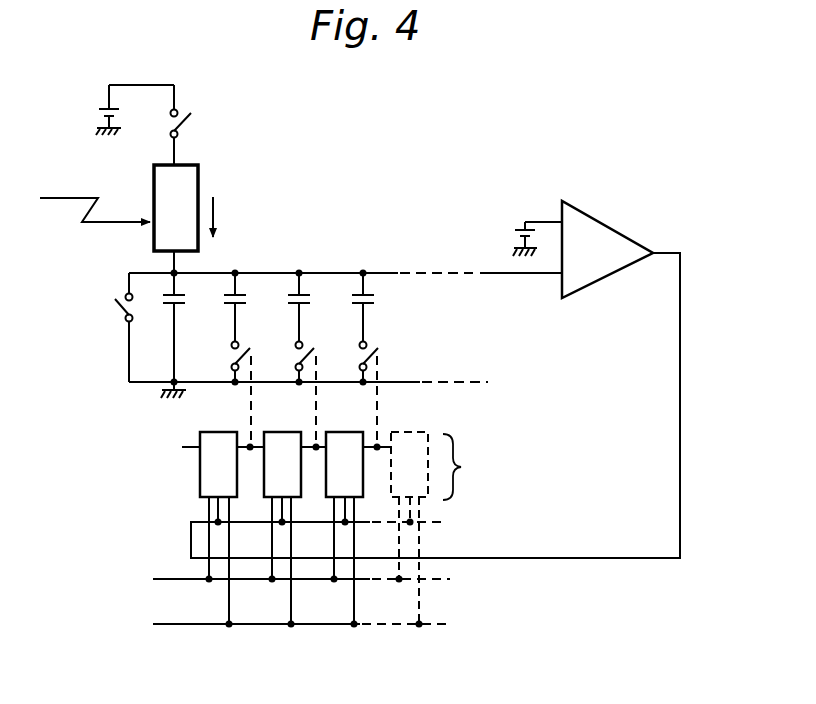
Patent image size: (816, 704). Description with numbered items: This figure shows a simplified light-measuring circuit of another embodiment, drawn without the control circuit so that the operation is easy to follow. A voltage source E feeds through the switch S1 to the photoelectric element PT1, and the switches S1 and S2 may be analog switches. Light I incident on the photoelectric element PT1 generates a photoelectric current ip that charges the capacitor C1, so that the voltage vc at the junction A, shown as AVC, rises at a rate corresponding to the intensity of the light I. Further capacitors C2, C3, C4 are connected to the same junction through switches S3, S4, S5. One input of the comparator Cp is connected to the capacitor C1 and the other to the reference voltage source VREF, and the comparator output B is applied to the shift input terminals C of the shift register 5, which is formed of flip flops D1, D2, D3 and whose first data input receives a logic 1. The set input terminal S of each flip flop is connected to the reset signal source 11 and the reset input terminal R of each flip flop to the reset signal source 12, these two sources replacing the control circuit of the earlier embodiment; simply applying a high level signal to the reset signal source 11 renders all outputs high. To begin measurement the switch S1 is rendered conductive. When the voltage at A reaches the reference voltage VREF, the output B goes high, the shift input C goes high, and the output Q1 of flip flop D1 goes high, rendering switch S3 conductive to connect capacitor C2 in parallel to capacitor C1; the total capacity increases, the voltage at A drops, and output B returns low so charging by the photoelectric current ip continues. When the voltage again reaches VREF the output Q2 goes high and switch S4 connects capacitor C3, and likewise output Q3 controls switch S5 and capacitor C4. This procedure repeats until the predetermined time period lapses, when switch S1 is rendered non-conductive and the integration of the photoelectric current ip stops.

The battery / voltage source E is at (93, 112).
The switch S1 is at (183, 128).
The photoelectric element PT1 is at (193, 219).
The light I is at (95, 196).
The photoelectric current ip is at (224, 217).
The junction A voltage vc AVC is at (334, 260).
The switch S2 is at (114, 311).
The capacitor C1 is at (184, 301).
The capacitor C2 is at (245, 302).
The capacitor C3 is at (309, 302).
The capacitor C4 is at (373, 302).
The switch S3 is at (245, 352).
The switch S4 is at (309, 352).
The switch S5 is at (373, 352).
The comparator Cp is at (589, 249).
The reference voltage source VREF is at (510, 233).
The comparator output B is at (435, 391).
The logic one input 1 is at (174, 446).
The flip flop D1 is at (212, 528).
The flip flop D2 is at (276, 528).
The flip flop D3 is at (338, 528).
The shift output terminal Q1 is at (250, 459).
The shift output terminal Q2 is at (313, 459).
The shift output terminal Q3 is at (377, 459).
The shift register 5 is at (435, 528).
The reset signal source 11 is at (251, 579).
The reset signal source 12 is at (251, 624).